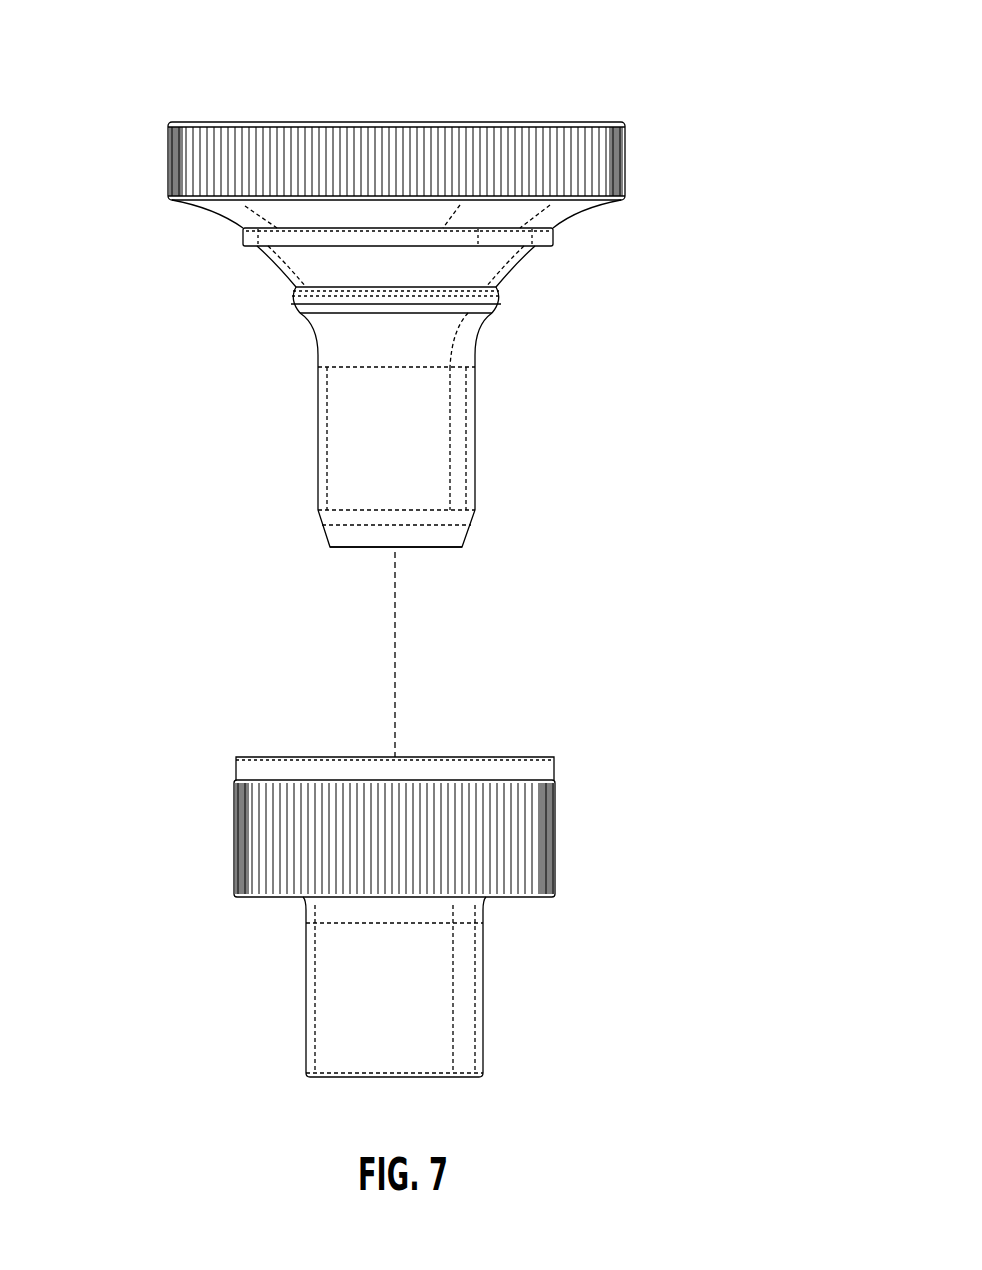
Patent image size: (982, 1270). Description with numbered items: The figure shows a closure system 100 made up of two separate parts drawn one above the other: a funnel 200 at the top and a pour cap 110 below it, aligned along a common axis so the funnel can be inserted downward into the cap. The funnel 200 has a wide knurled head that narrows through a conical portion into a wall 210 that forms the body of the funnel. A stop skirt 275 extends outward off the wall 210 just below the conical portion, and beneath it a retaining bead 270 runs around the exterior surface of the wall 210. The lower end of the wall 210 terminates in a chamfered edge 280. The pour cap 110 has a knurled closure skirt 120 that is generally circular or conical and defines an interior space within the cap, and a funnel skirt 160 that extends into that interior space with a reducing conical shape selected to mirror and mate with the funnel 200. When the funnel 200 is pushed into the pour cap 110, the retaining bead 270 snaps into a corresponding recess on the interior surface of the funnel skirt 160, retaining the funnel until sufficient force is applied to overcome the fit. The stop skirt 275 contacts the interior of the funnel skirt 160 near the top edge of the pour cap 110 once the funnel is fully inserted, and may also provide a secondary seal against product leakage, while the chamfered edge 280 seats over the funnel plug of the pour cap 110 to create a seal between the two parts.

The closure system 100 is at (255, 65).
The funnel 200 is at (705, 205).
The stop skirt 275 is at (248, 246).
The retaining bead 270 is at (497, 312).
The wall 210 is at (457, 407).
The chamfered edge 280 is at (487, 527).
The pour cap 110 is at (153, 963).
The closure skirt 120 is at (233, 828).
The funnel skirt 160 is at (442, 1002).